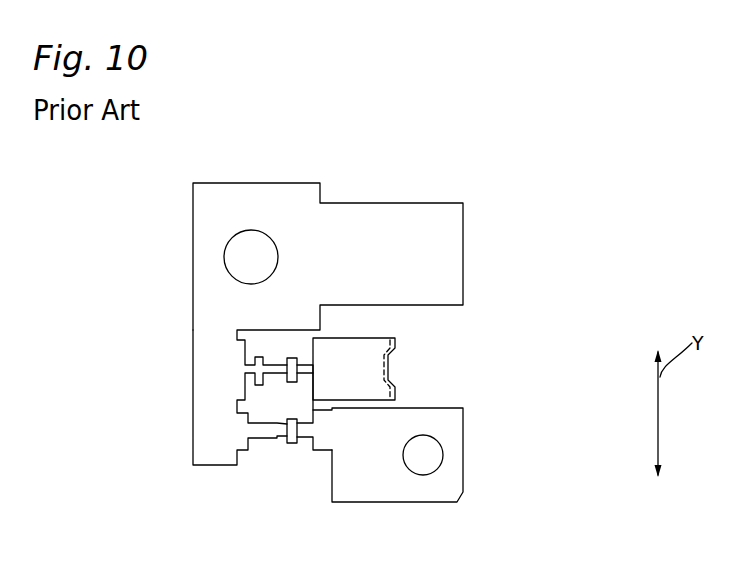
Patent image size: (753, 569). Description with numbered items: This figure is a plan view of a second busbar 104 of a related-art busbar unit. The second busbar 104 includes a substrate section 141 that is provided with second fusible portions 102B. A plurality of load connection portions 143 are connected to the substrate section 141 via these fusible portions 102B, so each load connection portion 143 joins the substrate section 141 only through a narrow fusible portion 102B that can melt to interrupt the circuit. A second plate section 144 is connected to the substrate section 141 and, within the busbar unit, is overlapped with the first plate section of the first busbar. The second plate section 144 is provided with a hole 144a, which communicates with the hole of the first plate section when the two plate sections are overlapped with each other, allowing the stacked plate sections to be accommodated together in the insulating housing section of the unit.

The second busbar 104 is at (520, 205).
The second plate section 144 is at (288, 198).
The hole 144a is at (250, 236).
The substrate section 141 is at (210, 445).
The load connection portion 143 is at (360, 343).
The second fusible portion 102B is at (278, 362).